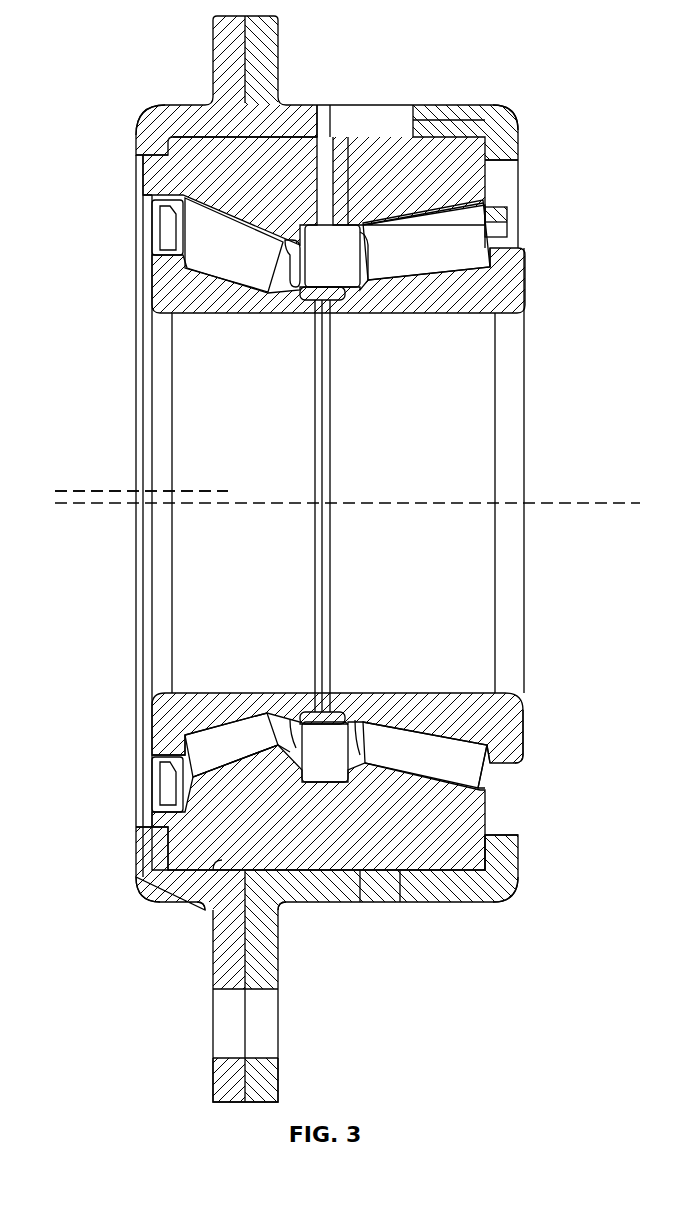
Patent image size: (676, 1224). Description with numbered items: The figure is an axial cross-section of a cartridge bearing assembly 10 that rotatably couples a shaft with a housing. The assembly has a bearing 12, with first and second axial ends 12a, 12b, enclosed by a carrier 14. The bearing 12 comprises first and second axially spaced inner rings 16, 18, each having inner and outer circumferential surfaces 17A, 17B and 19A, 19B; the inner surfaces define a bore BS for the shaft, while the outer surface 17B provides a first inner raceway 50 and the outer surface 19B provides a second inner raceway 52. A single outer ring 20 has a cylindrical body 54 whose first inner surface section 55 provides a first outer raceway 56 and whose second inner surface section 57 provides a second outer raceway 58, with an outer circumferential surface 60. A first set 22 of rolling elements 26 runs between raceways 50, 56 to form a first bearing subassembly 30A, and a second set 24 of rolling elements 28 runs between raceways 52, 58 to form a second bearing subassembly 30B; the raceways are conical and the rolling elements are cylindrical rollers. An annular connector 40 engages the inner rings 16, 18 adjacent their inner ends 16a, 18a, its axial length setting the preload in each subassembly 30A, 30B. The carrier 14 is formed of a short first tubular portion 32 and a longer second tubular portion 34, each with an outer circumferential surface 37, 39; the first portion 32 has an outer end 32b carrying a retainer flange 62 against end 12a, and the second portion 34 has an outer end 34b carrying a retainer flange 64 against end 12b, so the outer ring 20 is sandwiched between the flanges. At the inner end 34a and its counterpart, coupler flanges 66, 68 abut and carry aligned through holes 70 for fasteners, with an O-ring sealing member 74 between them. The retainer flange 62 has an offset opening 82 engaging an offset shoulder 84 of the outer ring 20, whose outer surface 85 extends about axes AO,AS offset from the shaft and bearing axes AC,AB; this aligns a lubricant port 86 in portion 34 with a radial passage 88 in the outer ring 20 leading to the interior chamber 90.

The cartridge bearing assembly 10 is at (128, 50).
The bearing 12 is at (118, 276).
The first axial end 12a is at (150, 152).
The second axial end 12b is at (497, 162).
The carrier 14 is at (532, 92).
The first inner ring 16 is at (165, 720).
The inner end 16a is at (320, 712).
The inner circumferential surface 17A is at (213, 316).
The outer circumferential surface 17B is at (246, 300).
The second inner ring 18 is at (515, 720).
The inner end 18a is at (338, 712).
The inner circumferential surface 19A is at (340, 316).
The outer circumferential surface 19B is at (432, 300).
The outer ring 20 is at (448, 872).
The first set of rolling elements 22 is at (220, 758).
The second set of rolling elements 24 is at (432, 748).
The rolling elements 26 is at (215, 735).
The rolling elements 28 is at (470, 758).
The first bearing subassembly 30A is at (213, 690).
The second bearing subassembly 30B is at (432, 690).
The first tubular portion 32 is at (124, 860).
The outer axial end 32b is at (150, 882).
The second tubular portion 34 is at (525, 860).
The inner axial end 34a is at (208, 906).
The outer axial end 34b is at (508, 884).
The outer circumferential surface 37 is at (430, 118).
The outer circumferential surface 39 is at (466, 108).
The annular connector 40 is at (325, 724).
The first inner raceway 50 is at (240, 280).
The second inner raceway 52 is at (405, 272).
The cylindrical body 54 is at (366, 882).
The first inner circumferential surface section 55 is at (218, 240).
The first outer raceway 56 is at (196, 262).
The second inner circumferential surface section 57 is at (430, 228).
The second outer raceway 58 is at (462, 290).
The outer circumferential surface 60 is at (406, 862).
The retainer flange 62 is at (146, 834).
The retainer flange 64 is at (502, 846).
The coupler flange 66 is at (224, 1080).
The coupler flange 68 is at (268, 1080).
The through holes 70 is at (230, 1000).
The annular sealing member 74 is at (250, 866).
The offset opening 82 is at (150, 810).
The offset shoulder 84 is at (158, 174).
The outer circumferential surface 85 is at (155, 128).
The lubricant port 86 is at (373, 118).
The lubricant passage 88 is at (348, 178).
The interior chamber 90 is at (325, 258).
The offset axes AO,AS is at (110, 490).
The central axes AC,AB is at (548, 497).
The bore BS is at (212, 578).